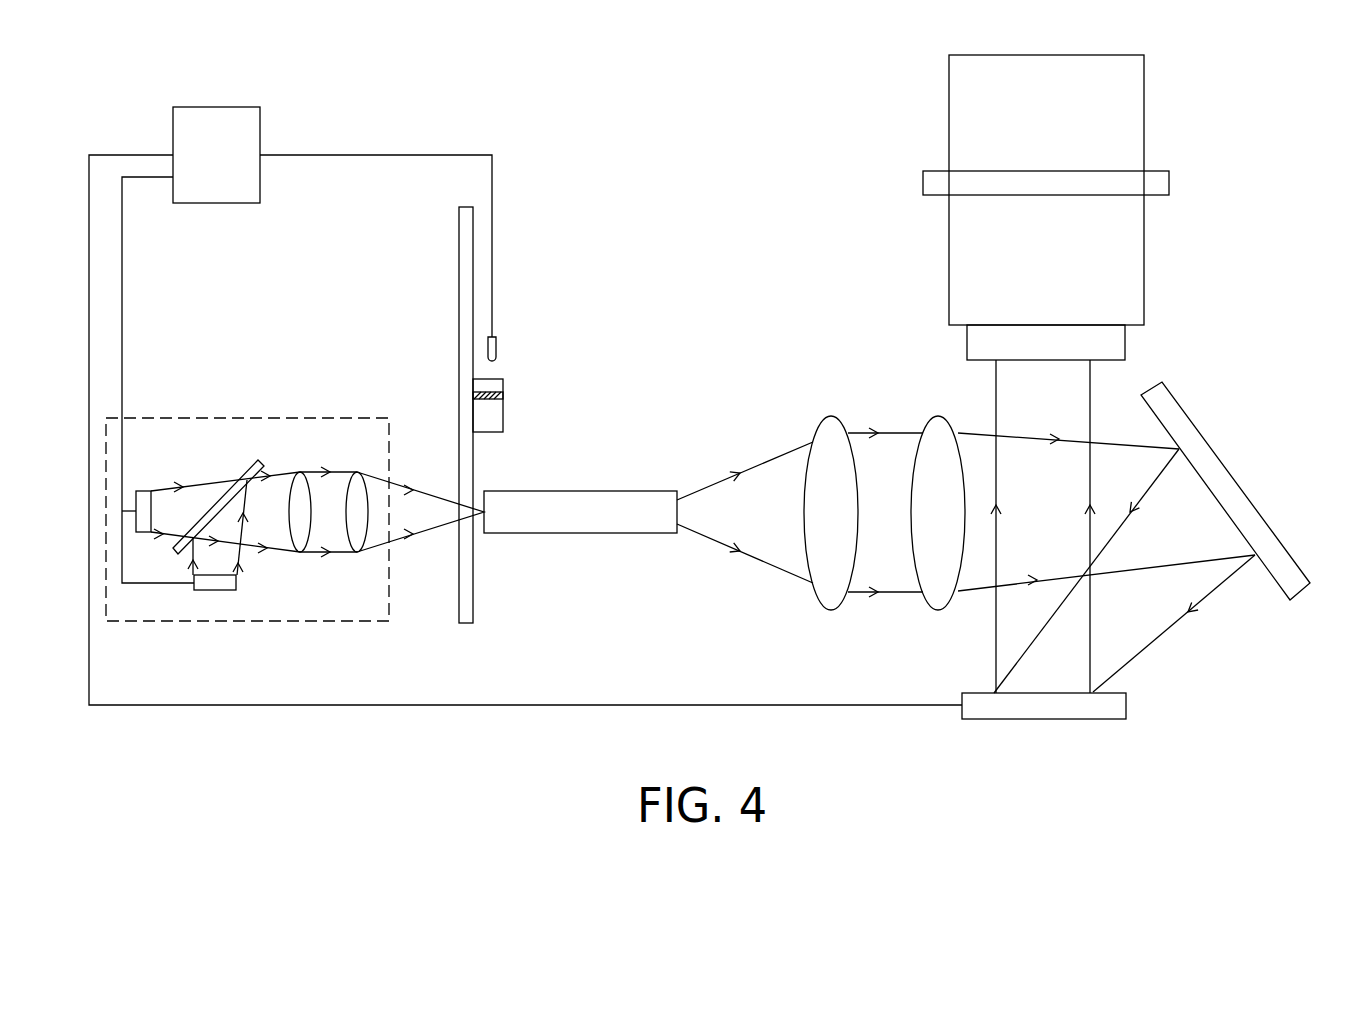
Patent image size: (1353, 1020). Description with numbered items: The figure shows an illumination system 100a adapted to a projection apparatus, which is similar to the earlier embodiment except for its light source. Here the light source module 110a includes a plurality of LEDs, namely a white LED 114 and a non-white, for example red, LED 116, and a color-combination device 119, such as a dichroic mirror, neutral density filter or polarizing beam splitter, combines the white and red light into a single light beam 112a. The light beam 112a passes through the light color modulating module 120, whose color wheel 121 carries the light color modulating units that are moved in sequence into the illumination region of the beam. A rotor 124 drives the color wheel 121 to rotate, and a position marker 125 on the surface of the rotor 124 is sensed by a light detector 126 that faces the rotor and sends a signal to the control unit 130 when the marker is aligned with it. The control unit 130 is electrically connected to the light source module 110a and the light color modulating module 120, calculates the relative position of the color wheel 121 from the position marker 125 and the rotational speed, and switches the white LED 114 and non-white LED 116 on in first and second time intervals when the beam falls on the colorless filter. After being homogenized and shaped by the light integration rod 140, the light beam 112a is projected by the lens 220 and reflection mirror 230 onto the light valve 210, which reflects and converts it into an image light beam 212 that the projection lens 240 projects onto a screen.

The illumination system 100a is at (547, 183).
The control unit 130 is at (211, 114).
The light source module 110a is at (247, 550).
The LED 114 is at (142, 490).
The color-combination device 119 is at (255, 462).
The LED 116 is at (200, 592).
The light beam 112a is at (436, 530).
The color wheel 121 is at (465, 226).
The light color modulating module 120 is at (537, 380).
The light detector 126 is at (497, 347).
The rotor 124 is at (490, 425).
The position marker 125 is at (494, 397).
The light integration rod 140 is at (622, 502).
The lens 220 is at (939, 437).
The reflection mirror 230 is at (1225, 480).
The light valve 210 is at (1048, 710).
The image light beam 212 is at (1090, 391).
The projection lens 240 is at (1120, 122).